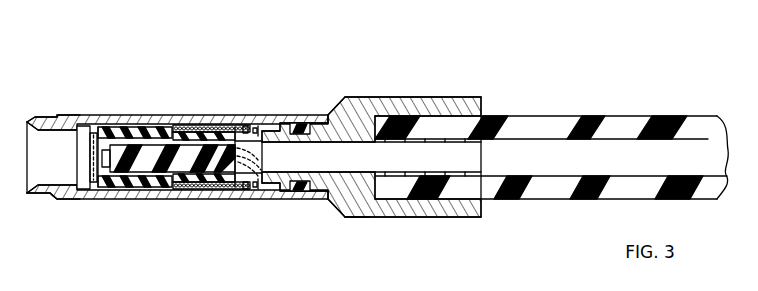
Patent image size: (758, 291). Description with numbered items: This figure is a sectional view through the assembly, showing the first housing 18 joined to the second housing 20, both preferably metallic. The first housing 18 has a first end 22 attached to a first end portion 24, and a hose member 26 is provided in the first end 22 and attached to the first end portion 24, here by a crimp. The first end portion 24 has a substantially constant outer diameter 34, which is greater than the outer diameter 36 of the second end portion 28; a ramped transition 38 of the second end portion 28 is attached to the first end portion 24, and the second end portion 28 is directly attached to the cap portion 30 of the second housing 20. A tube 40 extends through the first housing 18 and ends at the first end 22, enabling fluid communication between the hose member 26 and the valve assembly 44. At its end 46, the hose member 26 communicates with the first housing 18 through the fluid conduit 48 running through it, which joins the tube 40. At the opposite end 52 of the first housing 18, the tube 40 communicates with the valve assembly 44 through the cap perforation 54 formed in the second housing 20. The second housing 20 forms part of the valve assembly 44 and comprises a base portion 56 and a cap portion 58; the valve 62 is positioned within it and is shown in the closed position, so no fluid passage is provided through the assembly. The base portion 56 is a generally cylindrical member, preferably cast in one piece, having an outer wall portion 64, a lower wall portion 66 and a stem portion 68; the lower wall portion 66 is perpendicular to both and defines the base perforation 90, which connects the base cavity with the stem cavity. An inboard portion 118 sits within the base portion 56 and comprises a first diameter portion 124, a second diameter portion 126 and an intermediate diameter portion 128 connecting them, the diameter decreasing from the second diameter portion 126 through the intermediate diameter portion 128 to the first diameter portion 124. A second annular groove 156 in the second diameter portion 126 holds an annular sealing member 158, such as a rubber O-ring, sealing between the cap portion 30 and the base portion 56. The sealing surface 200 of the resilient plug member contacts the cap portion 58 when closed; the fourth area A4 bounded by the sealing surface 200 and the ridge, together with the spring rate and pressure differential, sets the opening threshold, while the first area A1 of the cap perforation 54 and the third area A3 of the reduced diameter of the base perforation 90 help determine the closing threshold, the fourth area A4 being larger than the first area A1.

The first housing 18 is at (413, 97).
The second housing 20 is at (163, 115).
The first end 22 is at (482, 105).
The first end portion 24 is at (448, 97).
The hose member 26 is at (543, 198).
The second end portion 28 is at (328, 103).
The cap portion 30 is at (282, 186).
The outer diameter 34 is at (380, 97).
The outer diameter 36 is at (338, 97).
The ramped transition 38 is at (337, 212).
The tube 40 is at (468, 142).
The valve assembly 44 is at (148, 199).
The end 46 is at (366, 200).
The fluid conduit 48 is at (552, 165).
The opposite end 52 is at (330, 205).
The cap perforation 54 is at (283, 155).
The base portion 56 is at (70, 199).
The cap portion 58 is at (267, 117).
The valve 62 is at (137, 127).
The outer wall portion 64 is at (177, 191).
The lower wall portion 66 is at (88, 199).
The stem portion 68 is at (50, 196).
The base perforation 90 is at (77, 148).
The inboard portion 118 is at (259, 188).
The first diameter portion 124 is at (257, 117).
The second diameter portion 126 is at (322, 117).
The intermediate diameter portion 128 is at (273, 117).
The second annular groove 156 is at (322, 200).
The sealing member 158 is at (298, 192).
The sealing surface 200 is at (250, 180).
The first area A1 is at (208, 126).
The third area A3 is at (108, 126).
The fourth area A4 is at (257, 190).